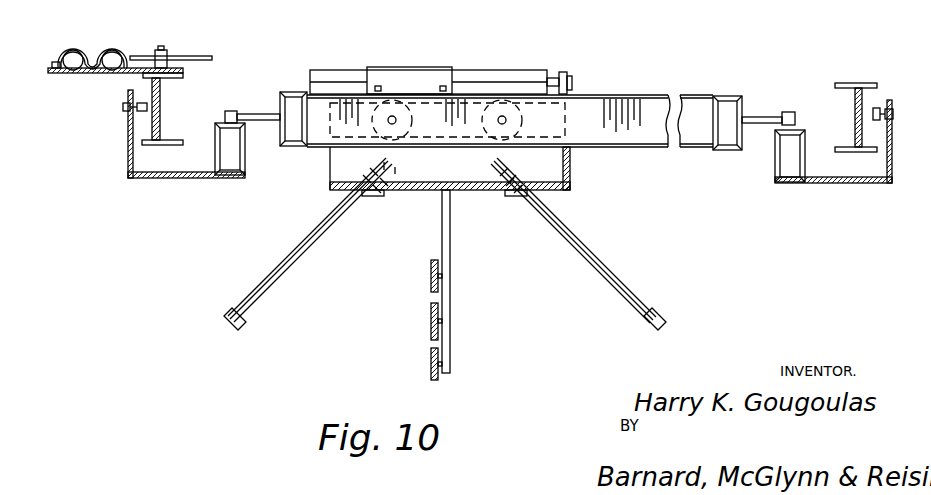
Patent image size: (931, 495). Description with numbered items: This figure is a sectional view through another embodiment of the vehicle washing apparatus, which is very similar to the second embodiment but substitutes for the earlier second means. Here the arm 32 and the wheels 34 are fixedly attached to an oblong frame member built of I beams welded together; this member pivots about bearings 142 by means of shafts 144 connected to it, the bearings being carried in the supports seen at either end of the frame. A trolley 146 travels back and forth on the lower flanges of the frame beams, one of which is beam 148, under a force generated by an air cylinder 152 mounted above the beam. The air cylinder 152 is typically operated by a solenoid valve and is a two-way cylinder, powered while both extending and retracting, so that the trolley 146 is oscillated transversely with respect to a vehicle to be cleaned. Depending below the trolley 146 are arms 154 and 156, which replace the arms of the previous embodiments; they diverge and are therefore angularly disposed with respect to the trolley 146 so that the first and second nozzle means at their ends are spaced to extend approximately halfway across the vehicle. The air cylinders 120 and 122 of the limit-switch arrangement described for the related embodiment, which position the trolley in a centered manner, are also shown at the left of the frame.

The air cylinder 120 is at (73, 50).
The air cylinder 122 is at (110, 62).
The bearings 142 is at (240, 112).
The shafts 144 is at (228, 111).
The trolley 146 is at (289, 188).
The beam 148 is at (655, 97).
The air cylinder 152 is at (528, 78).
The arm 154 is at (275, 278).
The arm 156 is at (622, 284).
The arm 32 is at (450, 295).
The wheels 34 is at (430, 355).